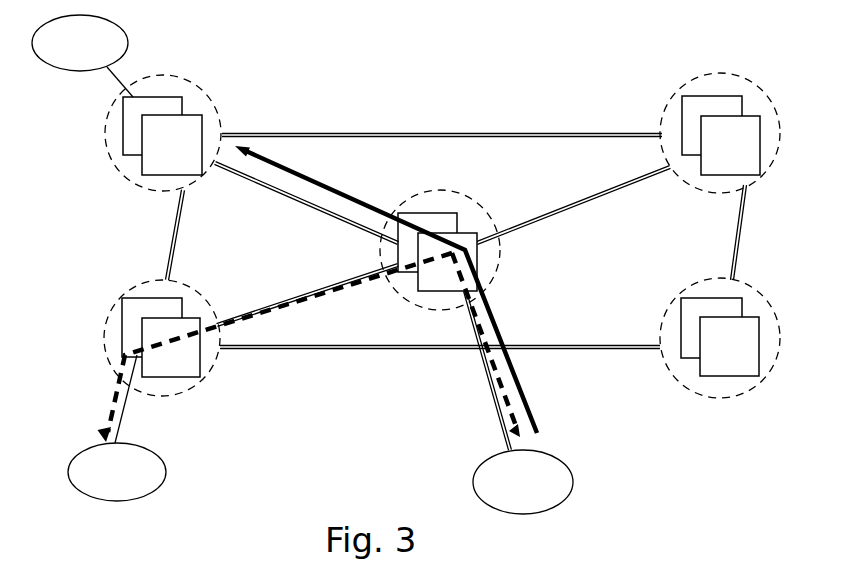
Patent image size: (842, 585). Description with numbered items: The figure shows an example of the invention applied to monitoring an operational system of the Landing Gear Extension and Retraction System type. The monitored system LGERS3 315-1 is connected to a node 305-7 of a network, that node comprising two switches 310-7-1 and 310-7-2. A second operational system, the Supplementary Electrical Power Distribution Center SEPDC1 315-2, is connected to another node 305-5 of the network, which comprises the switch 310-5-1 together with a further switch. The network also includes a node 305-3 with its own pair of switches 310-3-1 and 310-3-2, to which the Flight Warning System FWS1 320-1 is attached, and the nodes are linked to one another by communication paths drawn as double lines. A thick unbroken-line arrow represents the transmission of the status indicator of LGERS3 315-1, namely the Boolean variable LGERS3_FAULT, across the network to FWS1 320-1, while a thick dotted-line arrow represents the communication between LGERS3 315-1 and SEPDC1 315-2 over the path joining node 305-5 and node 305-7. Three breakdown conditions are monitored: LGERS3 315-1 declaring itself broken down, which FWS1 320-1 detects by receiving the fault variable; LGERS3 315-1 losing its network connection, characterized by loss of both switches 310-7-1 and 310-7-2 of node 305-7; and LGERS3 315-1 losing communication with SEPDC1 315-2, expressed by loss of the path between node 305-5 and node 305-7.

The Flight Warning System 1 320-1 is at (128, 44).
The network node 305-3 is at (155, 129).
The switch 310-3-2 is at (123, 125).
The switch 310-3-1 is at (142, 170).
The network node 305-7 is at (473, 251).
The switch 310-7-1 is at (428, 212).
The switch 310-7-2 is at (478, 267).
The network node 305-5 is at (144, 339).
The switch 310-5-1 is at (125, 296).
The Supplementary Electrical Power Distribution Center 1 315-2 is at (147, 498).
The Landing Gear Extension and Retraction System 315-1 is at (557, 505).